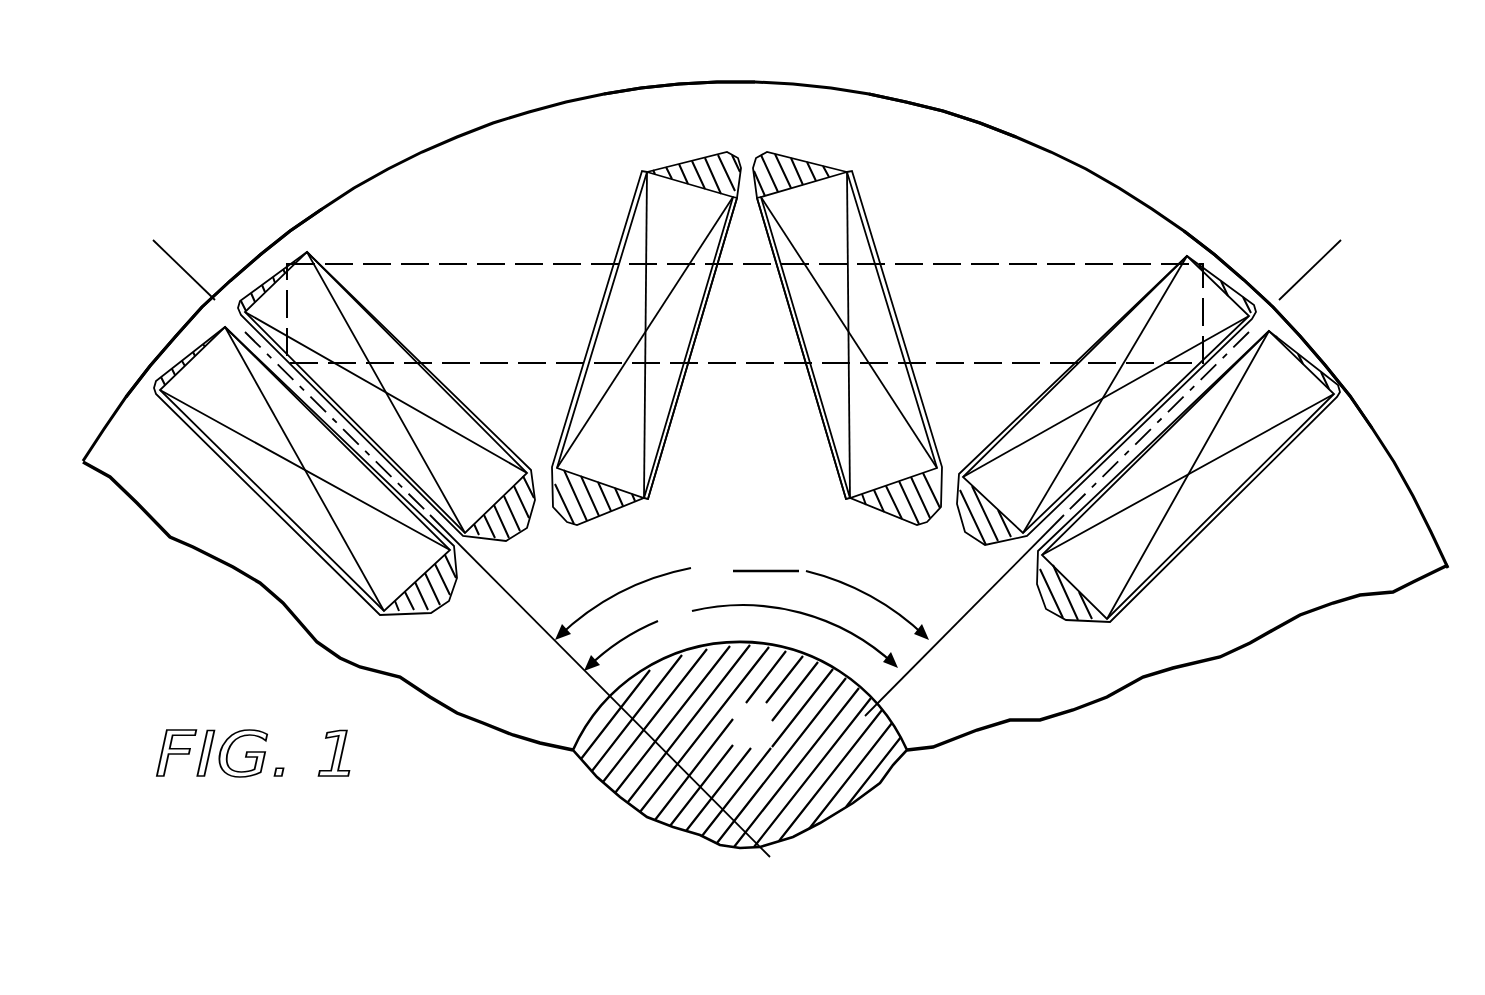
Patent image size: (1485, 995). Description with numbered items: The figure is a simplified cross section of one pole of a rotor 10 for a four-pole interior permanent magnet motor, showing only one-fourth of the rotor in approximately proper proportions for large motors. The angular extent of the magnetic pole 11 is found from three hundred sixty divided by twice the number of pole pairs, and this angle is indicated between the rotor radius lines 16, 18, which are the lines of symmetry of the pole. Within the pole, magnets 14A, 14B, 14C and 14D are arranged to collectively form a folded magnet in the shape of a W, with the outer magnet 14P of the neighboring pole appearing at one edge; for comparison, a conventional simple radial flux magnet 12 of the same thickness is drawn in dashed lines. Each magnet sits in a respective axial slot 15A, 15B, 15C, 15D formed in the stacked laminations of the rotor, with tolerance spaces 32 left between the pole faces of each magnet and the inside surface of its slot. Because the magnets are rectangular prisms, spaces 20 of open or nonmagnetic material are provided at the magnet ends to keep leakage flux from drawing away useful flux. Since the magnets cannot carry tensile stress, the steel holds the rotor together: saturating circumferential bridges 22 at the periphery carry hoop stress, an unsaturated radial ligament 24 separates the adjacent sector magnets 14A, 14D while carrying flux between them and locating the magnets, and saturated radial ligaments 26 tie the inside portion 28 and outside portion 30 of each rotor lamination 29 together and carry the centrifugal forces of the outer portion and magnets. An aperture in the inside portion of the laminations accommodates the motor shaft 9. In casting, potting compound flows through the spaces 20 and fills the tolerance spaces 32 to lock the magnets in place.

The motor shaft 9 is at (740, 743).
The rotor 10 is at (457, 116).
The magnetic pole 11 is at (742, 602).
The radial flux magnet 12 is at (552, 252).
The magnet 14A is at (456, 500).
The magnet 14B is at (583, 474).
The magnet 14C is at (865, 480).
The magnet 14D is at (994, 502).
The permanent magnet 14P is at (376, 579).
The axial slot 15A is at (458, 390).
The axial slot 15B is at (673, 413).
The axial slot 15C is at (833, 450).
The axial slot 15D is at (1125, 305).
The rotor radius line 16 is at (490, 587).
The rotor radius line 18 is at (965, 613).
The spaces 20 is at (693, 160).
The saturating circumferential bridges 22 is at (700, 103).
The unsaturated radial ligament 24 is at (207, 306).
The saturated radial ligaments 26 is at (747, 170).
The inside portion 28 is at (515, 720).
The rotor lamination 29 is at (1043, 145).
The outside portion 30 is at (946, 188).
The tolerance spaces 32 is at (637, 198).